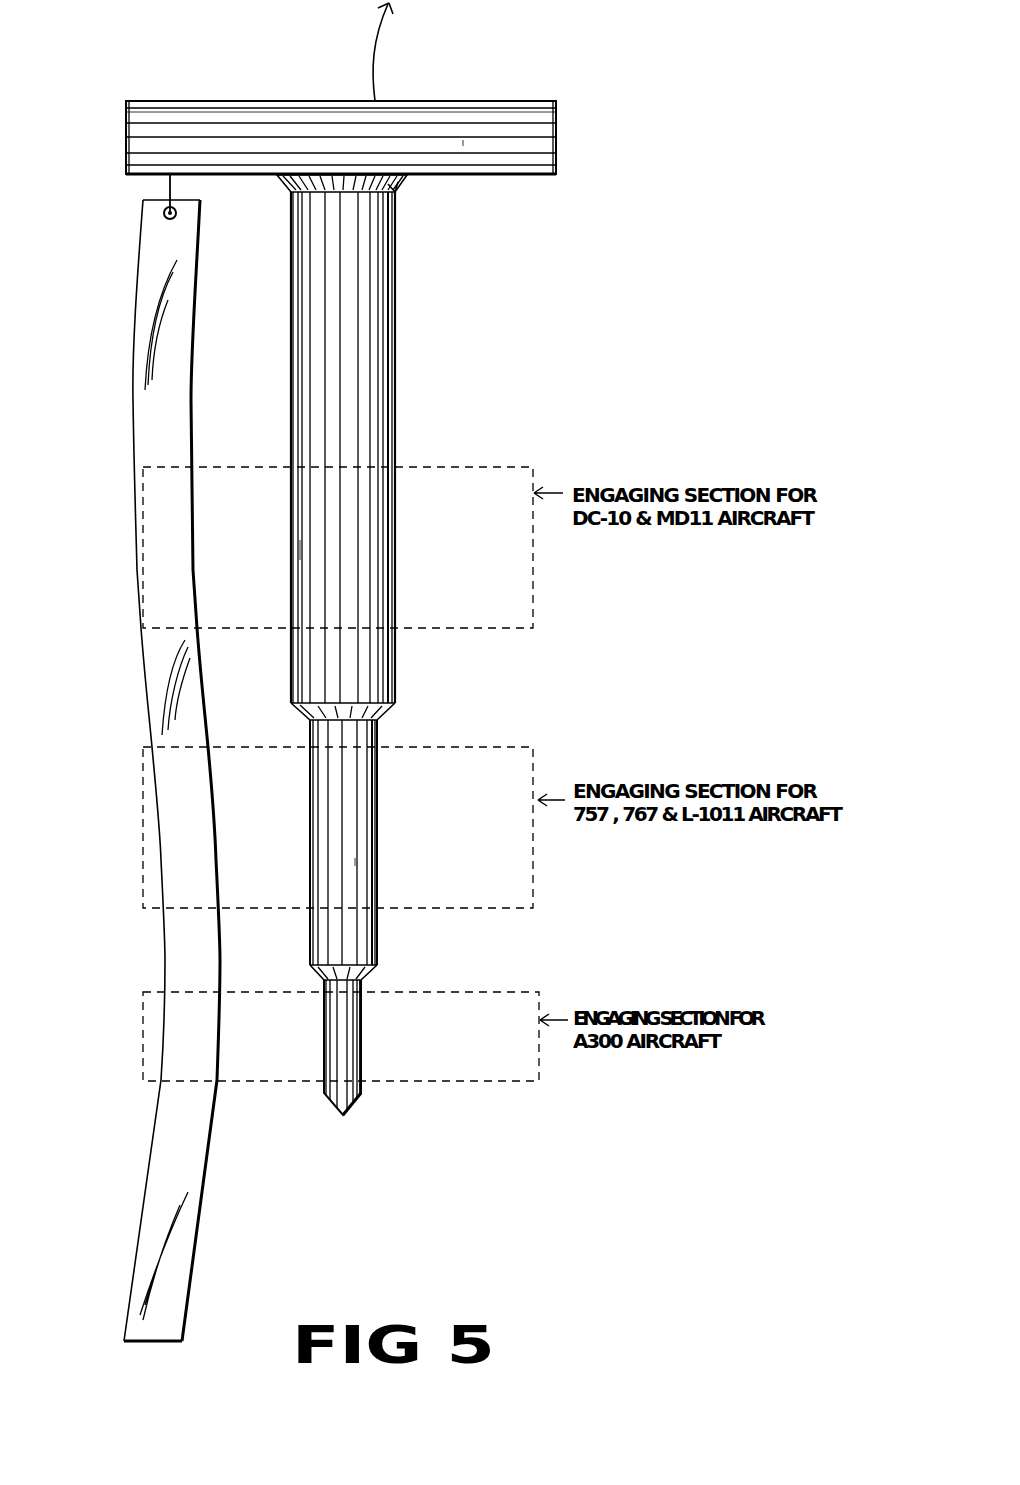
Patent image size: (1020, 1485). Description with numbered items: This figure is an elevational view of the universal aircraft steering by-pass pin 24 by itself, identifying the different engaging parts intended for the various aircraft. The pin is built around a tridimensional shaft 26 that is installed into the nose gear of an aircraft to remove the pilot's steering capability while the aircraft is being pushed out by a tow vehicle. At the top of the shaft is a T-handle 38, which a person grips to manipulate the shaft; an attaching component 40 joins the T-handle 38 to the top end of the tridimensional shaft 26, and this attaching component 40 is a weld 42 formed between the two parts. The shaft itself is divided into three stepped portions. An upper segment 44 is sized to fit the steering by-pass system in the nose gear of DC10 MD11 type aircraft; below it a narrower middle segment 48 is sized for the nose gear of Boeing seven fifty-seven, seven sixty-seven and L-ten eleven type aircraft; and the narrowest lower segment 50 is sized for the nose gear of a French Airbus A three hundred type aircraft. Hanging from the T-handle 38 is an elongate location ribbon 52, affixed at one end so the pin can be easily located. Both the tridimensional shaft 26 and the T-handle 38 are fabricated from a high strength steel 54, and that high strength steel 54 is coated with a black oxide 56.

The universal aircraft steering by-pass pin 24 is at (518, 334).
The tridimensional shaft 26 is at (397, 387).
The T-handle 38 is at (510, 124).
The attaching component 40 is at (400, 192).
The weld 42 is at (290, 186).
The upper segment 44 is at (307, 371).
The middle segment 48 is at (328, 843).
The lower segment 50 is at (340, 1047).
The elongate location ribbon 52 is at (148, 419).
The high strength steel 54 is at (181, 133).
The black oxide 56 is at (463, 144).